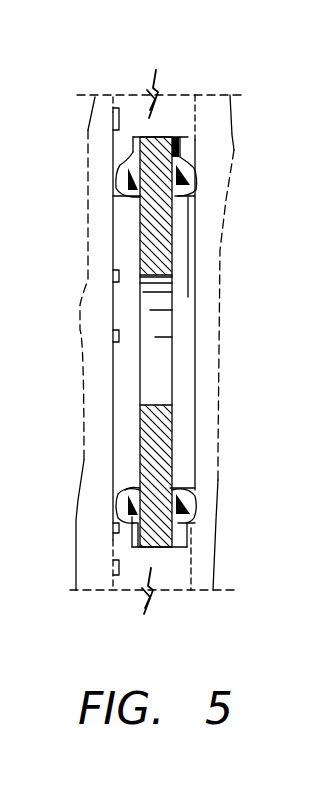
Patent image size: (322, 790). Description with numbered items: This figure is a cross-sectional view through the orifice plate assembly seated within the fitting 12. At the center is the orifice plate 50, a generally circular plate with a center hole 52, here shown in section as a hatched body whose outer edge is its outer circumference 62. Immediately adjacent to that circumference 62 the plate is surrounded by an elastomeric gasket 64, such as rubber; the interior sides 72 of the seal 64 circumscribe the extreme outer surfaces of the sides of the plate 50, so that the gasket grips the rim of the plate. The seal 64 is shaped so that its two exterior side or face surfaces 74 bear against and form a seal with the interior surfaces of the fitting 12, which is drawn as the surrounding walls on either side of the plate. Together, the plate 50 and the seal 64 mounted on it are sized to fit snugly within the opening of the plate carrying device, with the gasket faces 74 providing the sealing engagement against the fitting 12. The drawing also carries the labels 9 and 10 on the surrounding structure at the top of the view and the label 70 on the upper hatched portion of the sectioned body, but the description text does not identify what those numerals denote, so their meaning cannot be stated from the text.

The sleeve 9 is at (149, 313).
The shaft 10 is at (195, 118).
The fitting 12 is at (210, 118).
The orifice plate 50 is at (166, 449).
The center hole 52 is at (155, 353).
The upper seal ring 70 is at (165, 231).
The interior sides of seal 72 is at (138, 478).
The exterior side or face surfaces 74 is at (185, 168).
The elastomeric gasket 64 is at (118, 506).
The outer circumference 62 is at (135, 552).